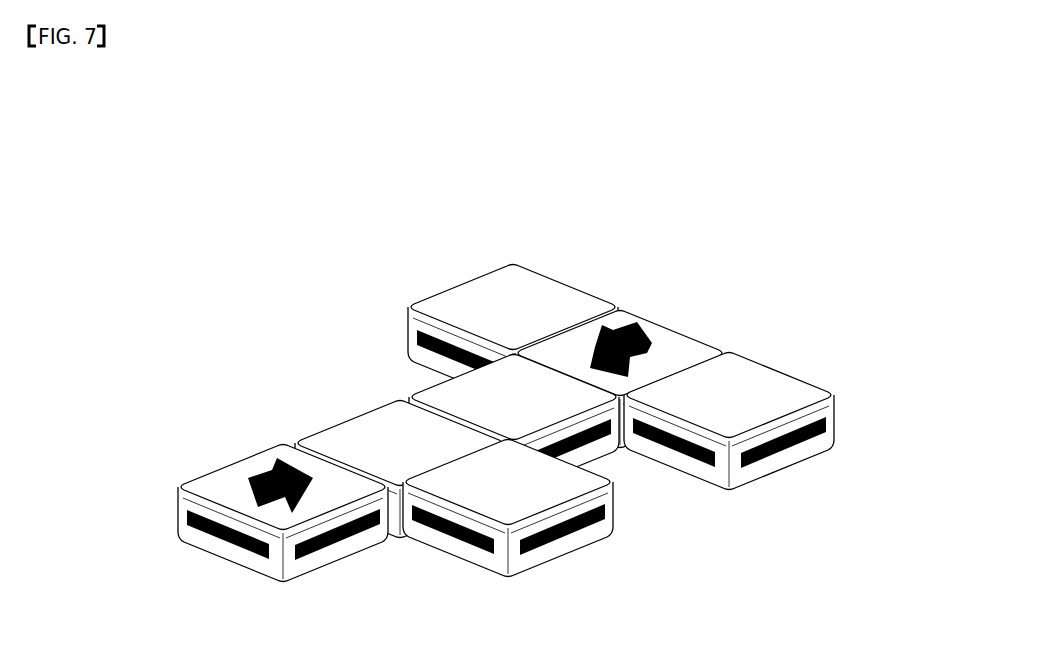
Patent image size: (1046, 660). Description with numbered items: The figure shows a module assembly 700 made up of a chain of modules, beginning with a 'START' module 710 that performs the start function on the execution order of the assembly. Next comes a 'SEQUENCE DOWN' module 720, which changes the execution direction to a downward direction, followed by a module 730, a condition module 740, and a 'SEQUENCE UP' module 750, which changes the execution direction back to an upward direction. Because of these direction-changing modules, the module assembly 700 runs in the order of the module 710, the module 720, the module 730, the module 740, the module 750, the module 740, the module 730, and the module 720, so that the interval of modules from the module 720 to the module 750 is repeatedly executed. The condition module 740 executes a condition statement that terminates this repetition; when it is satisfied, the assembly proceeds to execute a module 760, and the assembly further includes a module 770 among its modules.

The module assembly 700 is at (714, 136).
The 'START' module 710 is at (471, 264).
The 'SEQUENCE DOWN' module 720 is at (678, 315).
The module 730 is at (426, 365).
The condition module 740 is at (342, 412).
The 'SEQUENCE UP' module 750 is at (237, 450).
The module 760 is at (586, 556).
The module 770 is at (800, 483).